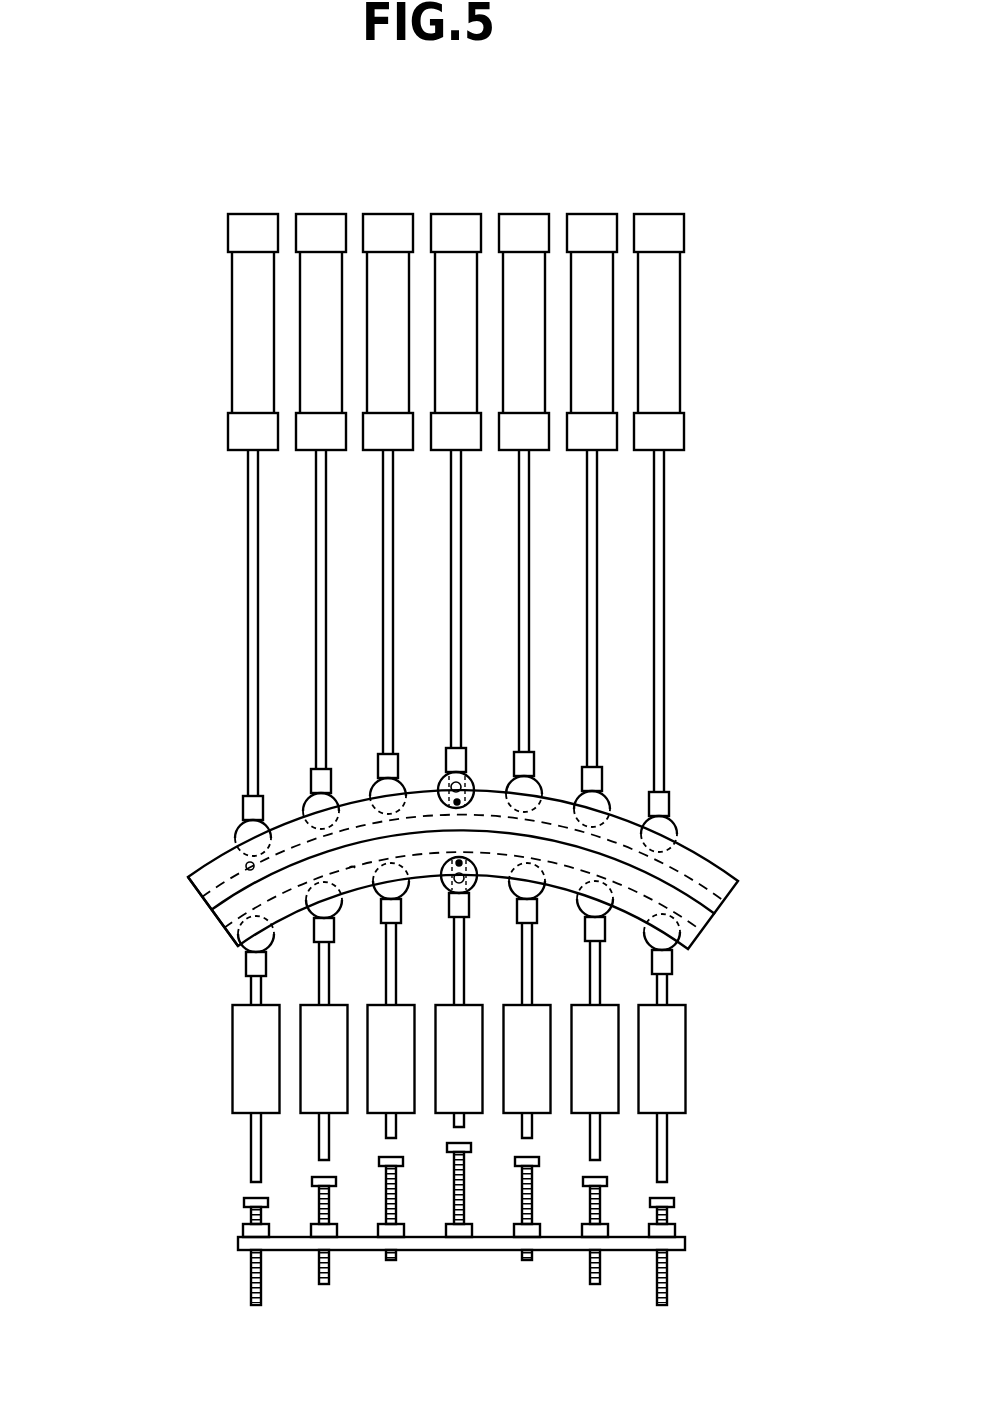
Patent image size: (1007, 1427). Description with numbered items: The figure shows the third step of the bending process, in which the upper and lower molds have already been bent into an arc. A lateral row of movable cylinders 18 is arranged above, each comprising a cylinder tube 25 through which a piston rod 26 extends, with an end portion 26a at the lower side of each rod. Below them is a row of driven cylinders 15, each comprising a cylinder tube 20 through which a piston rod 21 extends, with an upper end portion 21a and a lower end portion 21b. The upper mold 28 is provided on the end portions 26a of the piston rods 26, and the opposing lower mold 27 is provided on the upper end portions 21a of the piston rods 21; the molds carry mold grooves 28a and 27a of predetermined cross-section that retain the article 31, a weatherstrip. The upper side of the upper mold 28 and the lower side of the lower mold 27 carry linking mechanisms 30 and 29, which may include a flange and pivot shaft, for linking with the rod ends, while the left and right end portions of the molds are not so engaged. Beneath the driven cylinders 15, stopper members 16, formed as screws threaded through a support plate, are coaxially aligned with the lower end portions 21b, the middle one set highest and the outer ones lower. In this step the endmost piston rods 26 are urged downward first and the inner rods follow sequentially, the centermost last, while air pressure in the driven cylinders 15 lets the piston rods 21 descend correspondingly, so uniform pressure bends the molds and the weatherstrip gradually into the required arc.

The driven cylinder 15 is at (700, 1066).
The stopper member 16 is at (467, 1185).
The movable cylinder 18 is at (226, 306).
The cylinder tube 20 is at (243, 1045).
The piston rod 21 is at (251, 983).
The upper end portion 21a is at (248, 968).
The lower end portion 21b is at (252, 1165).
The cylinder tube 25 is at (242, 376).
The piston rod 26 is at (252, 573).
The end portion 26a is at (247, 800).
The lower mold 27 is at (707, 928).
The mold groove 27a is at (352, 870).
The upper mold 28 is at (720, 870).
The mold groove 28a is at (244, 864).
The linking mechanism 29 is at (461, 893).
The linking mechanism 30 is at (462, 773).
The article 31 is at (232, 866).